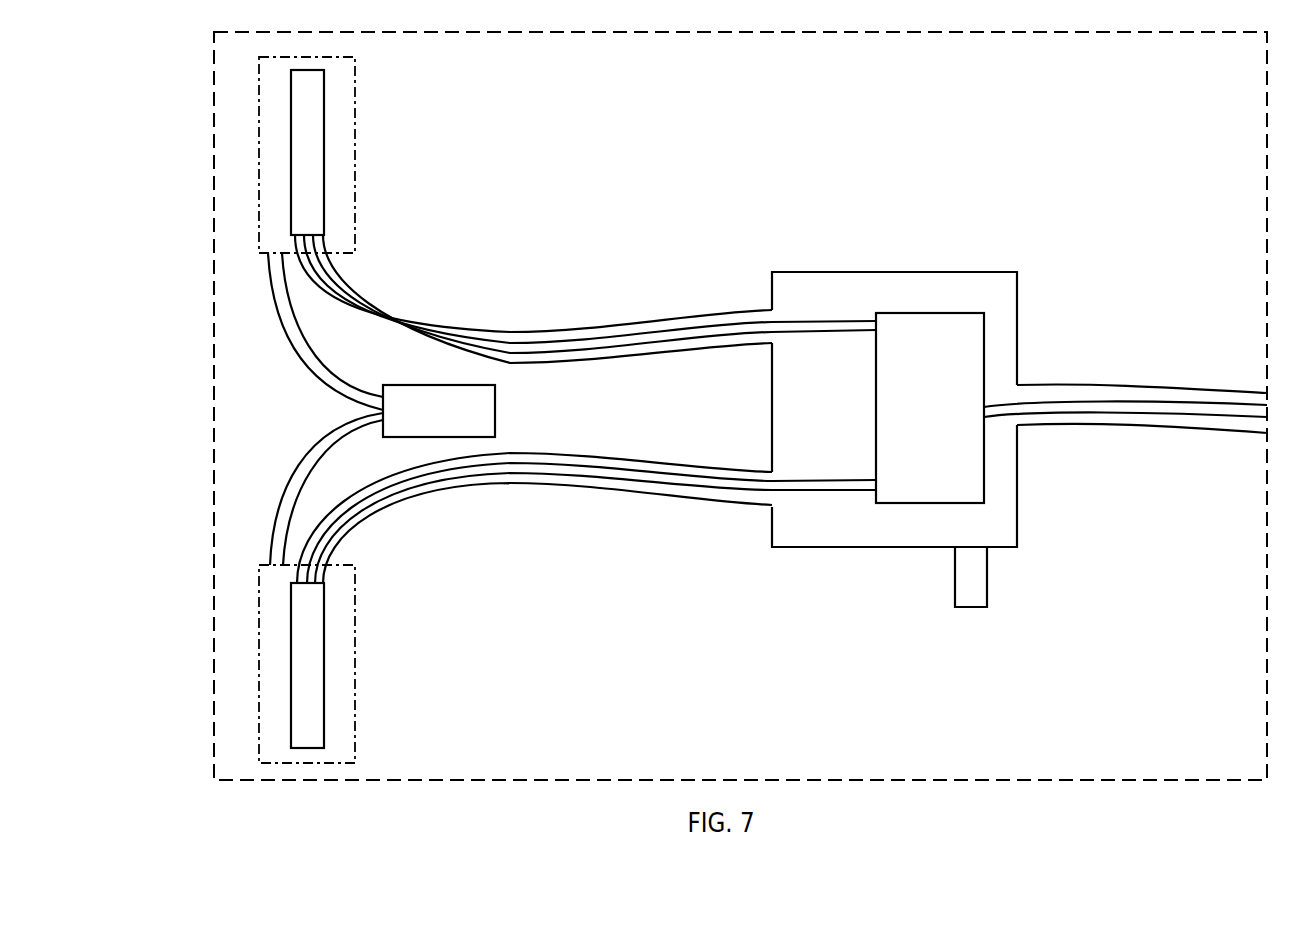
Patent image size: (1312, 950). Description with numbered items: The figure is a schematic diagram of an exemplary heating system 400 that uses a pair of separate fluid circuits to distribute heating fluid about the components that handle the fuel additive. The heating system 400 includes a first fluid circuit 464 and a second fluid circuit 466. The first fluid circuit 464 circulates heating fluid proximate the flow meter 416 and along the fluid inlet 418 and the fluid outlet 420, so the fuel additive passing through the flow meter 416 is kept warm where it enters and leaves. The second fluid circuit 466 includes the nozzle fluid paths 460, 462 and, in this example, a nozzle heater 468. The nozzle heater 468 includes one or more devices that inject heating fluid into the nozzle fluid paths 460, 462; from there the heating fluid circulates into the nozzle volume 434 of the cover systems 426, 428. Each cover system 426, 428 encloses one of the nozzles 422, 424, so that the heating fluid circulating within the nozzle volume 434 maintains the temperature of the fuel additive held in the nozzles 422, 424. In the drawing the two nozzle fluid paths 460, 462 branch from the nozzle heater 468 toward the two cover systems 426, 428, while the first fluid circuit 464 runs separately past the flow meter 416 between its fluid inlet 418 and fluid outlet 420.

The heating system 400 is at (1088, 163).
The flow meter 416 is at (915, 456).
The fluid inlet 418 is at (997, 417).
The fluid outlet 420 is at (828, 330).
The nozzle 422 is at (324, 195).
The nozzle 424 is at (324, 723).
The cover system 426 is at (355, 88).
The cover system 428 is at (355, 594).
The nozzle volume 434 is at (333, 145).
The nozzle fluid path 460 is at (285, 337).
The nozzle fluid path 462 is at (288, 475).
The first fluid circuit 464 is at (705, 298).
The second fluid circuit 466 is at (310, 410).
The nozzle heater 468 is at (429, 424).